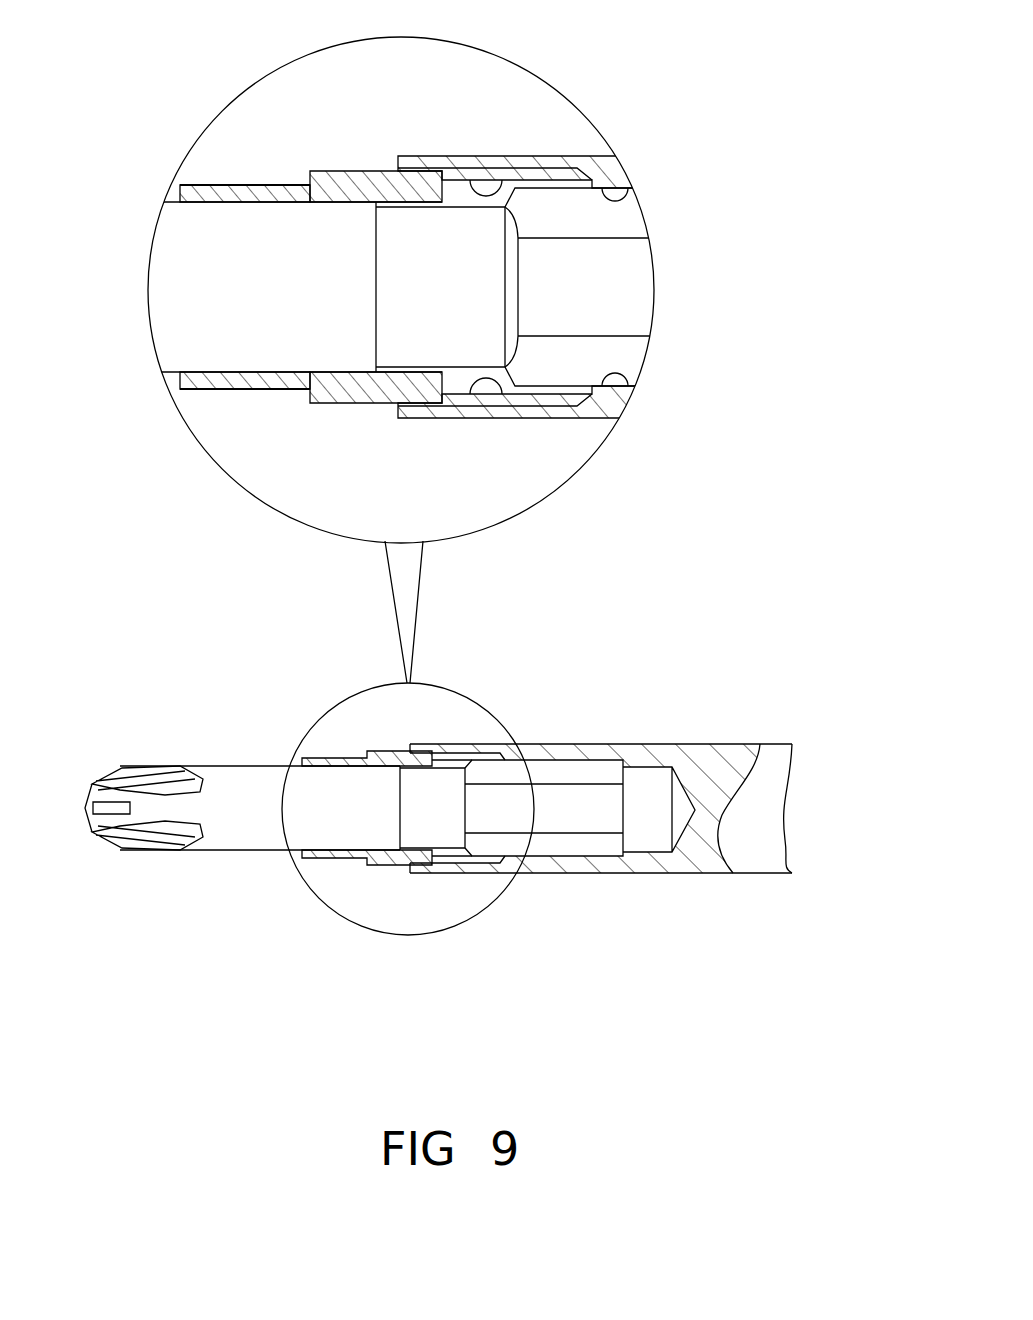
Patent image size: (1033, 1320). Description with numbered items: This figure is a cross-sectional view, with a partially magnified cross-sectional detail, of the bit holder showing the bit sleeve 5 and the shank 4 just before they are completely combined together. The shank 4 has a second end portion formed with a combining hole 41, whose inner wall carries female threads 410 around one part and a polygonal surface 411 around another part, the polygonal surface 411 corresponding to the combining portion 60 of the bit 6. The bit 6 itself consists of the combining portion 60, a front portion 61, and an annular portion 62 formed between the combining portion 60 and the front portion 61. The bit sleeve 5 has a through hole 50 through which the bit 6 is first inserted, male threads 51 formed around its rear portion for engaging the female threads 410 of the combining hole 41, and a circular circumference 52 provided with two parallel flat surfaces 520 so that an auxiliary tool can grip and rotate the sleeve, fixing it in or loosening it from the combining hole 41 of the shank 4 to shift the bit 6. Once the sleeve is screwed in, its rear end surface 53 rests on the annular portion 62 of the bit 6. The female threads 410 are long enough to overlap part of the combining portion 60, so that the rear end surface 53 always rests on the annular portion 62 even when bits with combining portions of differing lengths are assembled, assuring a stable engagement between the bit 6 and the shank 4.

The shank 4 is at (564, 453).
The combining hole 41 is at (396, 168).
The female threads 410 is at (507, 193).
The polygonal surface 411 is at (640, 197).
The bit sleeve 5 is at (317, 437).
The through hole 50 is at (172, 196).
The male threads 51 is at (372, 400).
The circular circumference 52 is at (193, 385).
The rear end surface 53 is at (442, 391).
The flat surfaces 520 is at (255, 185).
The bit 6 is at (404, 575).
The combining portion 60 is at (627, 293).
The front portion 61 is at (187, 315).
The annular portion 62 is at (505, 255).